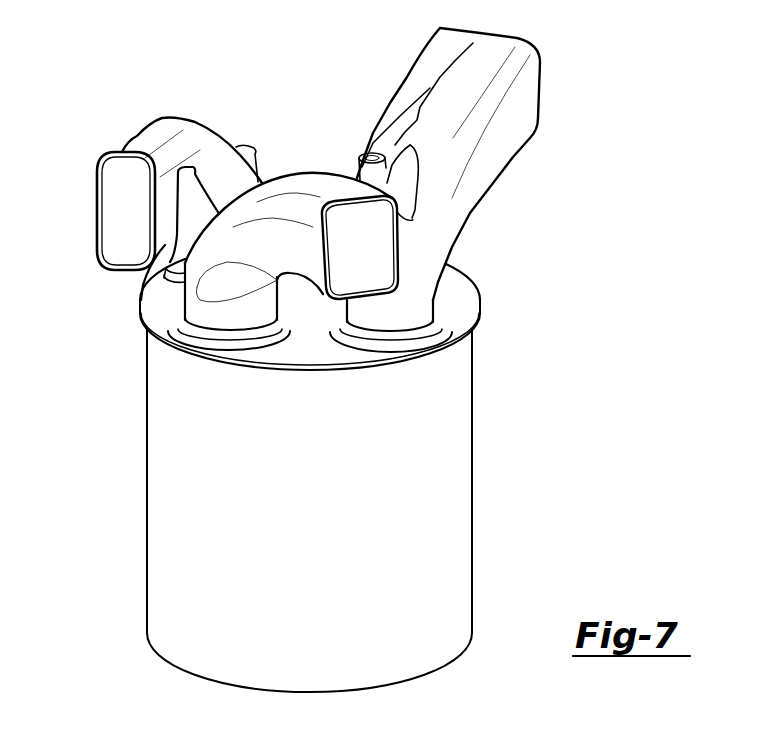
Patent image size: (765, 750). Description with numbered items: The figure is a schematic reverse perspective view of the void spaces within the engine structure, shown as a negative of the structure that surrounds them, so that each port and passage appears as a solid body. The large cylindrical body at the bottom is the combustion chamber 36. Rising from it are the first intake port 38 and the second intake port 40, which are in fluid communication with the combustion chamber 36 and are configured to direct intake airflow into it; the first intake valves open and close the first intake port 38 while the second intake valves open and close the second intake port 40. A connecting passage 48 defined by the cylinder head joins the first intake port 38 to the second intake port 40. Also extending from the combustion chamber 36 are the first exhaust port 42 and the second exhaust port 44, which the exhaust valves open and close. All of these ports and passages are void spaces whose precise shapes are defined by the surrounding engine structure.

The combustion chamber 36 is at (443, 433).
The first intake port 38 is at (143, 142).
The second intake port 40 is at (297, 207).
The first exhaust port 42 is at (425, 70).
The second exhaust port 44 is at (427, 255).
The connecting passage 48 is at (187, 202).